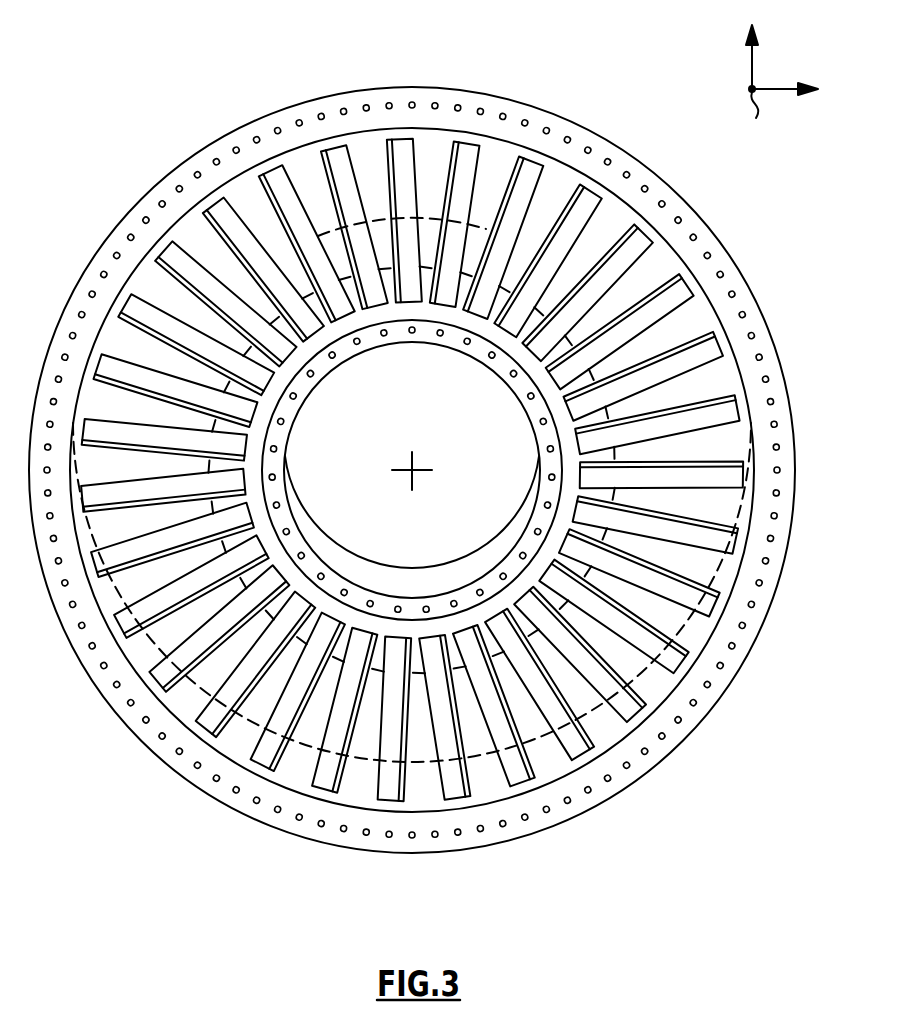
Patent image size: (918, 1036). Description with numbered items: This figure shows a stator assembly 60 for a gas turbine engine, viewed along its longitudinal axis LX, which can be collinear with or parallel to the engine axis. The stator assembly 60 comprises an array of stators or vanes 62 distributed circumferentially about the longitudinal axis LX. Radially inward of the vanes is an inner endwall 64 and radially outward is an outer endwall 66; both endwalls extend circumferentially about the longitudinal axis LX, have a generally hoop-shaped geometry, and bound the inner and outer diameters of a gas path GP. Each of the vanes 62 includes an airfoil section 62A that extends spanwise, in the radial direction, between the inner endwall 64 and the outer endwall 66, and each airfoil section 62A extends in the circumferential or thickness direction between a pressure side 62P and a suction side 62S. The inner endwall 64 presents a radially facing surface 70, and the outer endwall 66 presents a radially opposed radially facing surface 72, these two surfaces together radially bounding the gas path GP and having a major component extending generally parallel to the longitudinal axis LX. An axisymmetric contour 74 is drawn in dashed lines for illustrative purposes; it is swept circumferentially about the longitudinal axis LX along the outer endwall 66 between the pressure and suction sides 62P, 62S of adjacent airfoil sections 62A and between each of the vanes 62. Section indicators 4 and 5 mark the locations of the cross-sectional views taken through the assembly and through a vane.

The stator assembly 60 is at (104, 136).
The vane 62 is at (466, 160).
The airfoil section 62A is at (401, 76).
The pressure side 62P is at (654, 147).
The suction side 62S is at (440, 200).
The inner endwall 64 is at (455, 316).
The outer endwall 66 is at (492, 790).
The radially facing surface 70 is at (526, 330).
The radially facing surface 72 is at (560, 753).
The axisymmetric contour 74 is at (368, 778).
The gas path GP is at (494, 206).
The longitudinal axis LX is at (414, 474).
The section line 4- 4 is at (378, 33).
The section line 5- 5 is at (309, 247).